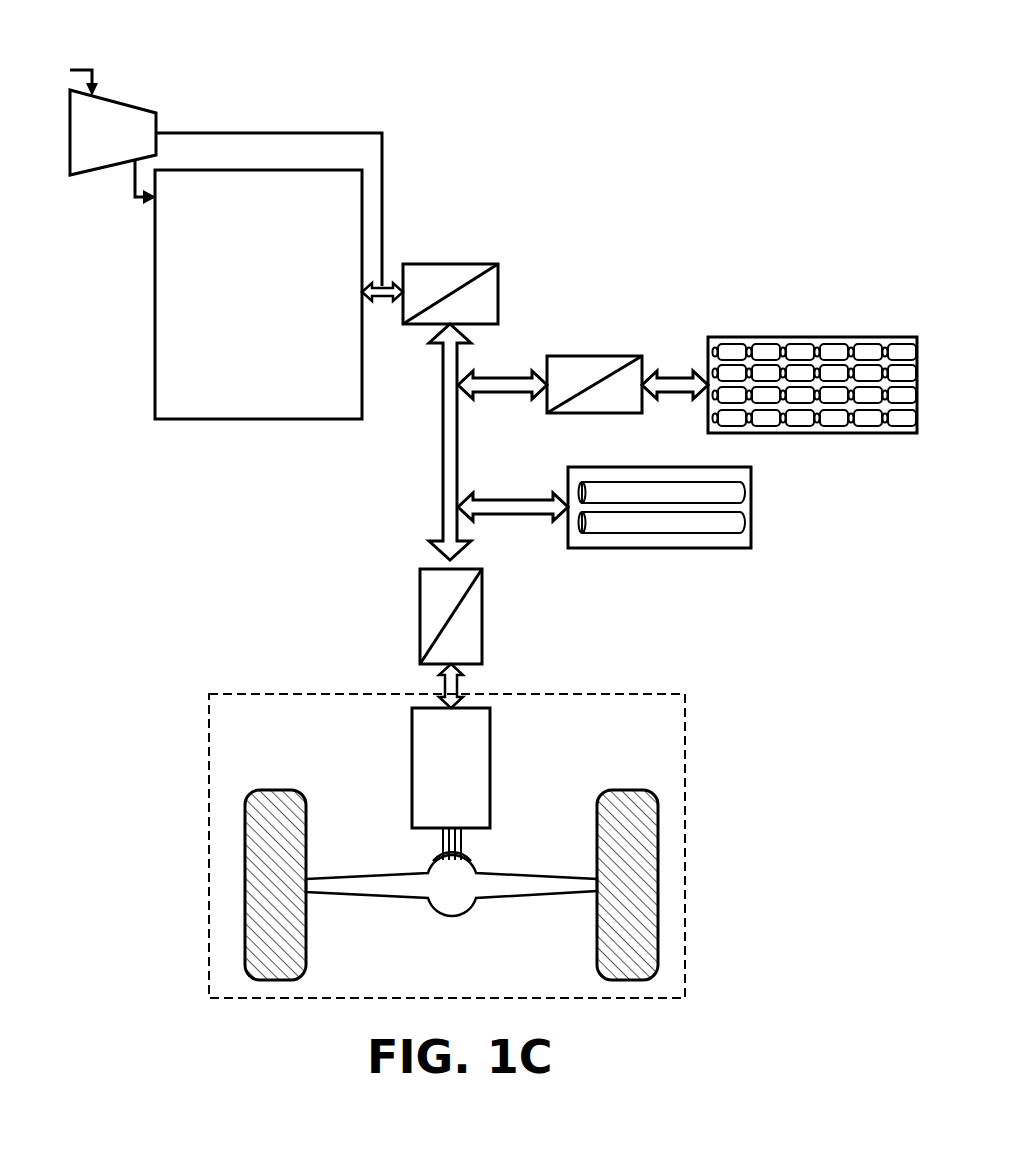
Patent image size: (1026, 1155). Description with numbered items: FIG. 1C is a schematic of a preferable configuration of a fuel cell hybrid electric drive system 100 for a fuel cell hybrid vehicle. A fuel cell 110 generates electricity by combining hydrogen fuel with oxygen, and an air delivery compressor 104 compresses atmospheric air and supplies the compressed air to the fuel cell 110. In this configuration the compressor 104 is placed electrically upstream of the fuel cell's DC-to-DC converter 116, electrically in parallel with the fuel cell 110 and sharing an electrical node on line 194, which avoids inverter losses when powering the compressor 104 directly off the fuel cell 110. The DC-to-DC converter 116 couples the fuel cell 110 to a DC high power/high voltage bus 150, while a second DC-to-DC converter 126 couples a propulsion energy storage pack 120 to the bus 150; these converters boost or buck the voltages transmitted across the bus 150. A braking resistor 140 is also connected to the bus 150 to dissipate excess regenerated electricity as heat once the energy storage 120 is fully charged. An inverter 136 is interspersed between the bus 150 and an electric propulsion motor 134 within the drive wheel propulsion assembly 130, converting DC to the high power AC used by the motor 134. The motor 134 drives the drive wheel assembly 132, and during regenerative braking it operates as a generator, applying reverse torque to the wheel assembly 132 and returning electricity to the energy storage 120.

The fuel cell hybrid electric drive system 100 is at (455, 57).
The air delivery compressor 104 is at (103, 95).
The fuel cell 110 is at (248, 289).
The DC-to-DC converter 116 is at (450, 264).
The propulsion energy storage pack 120 is at (805, 337).
The DC-to-DC converter 126 is at (595, 356).
The drive wheel propulsion assembly 130 is at (609, 694).
The drive wheel assembly 132 is at (456, 910).
The electric propulsion motor 134 is at (451, 768).
The inverter 136 is at (420, 617).
The braking resistor 140 is at (660, 548).
The DC high power/high voltage bus 150 is at (515, 390).
The line 194 is at (384, 190).